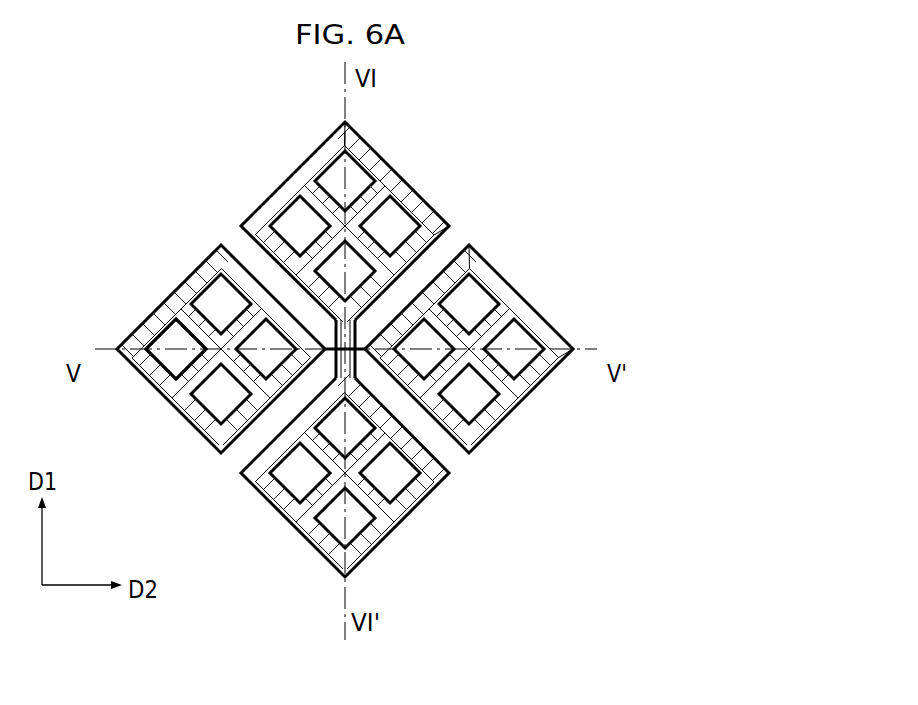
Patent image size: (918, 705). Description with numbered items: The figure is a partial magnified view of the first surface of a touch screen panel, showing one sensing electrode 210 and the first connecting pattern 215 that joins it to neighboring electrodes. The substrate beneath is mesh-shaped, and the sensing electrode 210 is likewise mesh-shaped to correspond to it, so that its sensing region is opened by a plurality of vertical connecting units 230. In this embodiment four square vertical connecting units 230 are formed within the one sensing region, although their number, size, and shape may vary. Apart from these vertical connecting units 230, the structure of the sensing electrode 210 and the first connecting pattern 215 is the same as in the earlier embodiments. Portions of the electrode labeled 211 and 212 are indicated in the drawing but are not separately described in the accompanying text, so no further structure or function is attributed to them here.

The sensing electrode 210 is at (574, 128).
The first branch electrode 211 is at (416, 197).
The second branch electrode 212 is at (481, 274).
The first connecting pattern 215 is at (352, 363).
The vertical connecting unit 230 is at (168, 362).